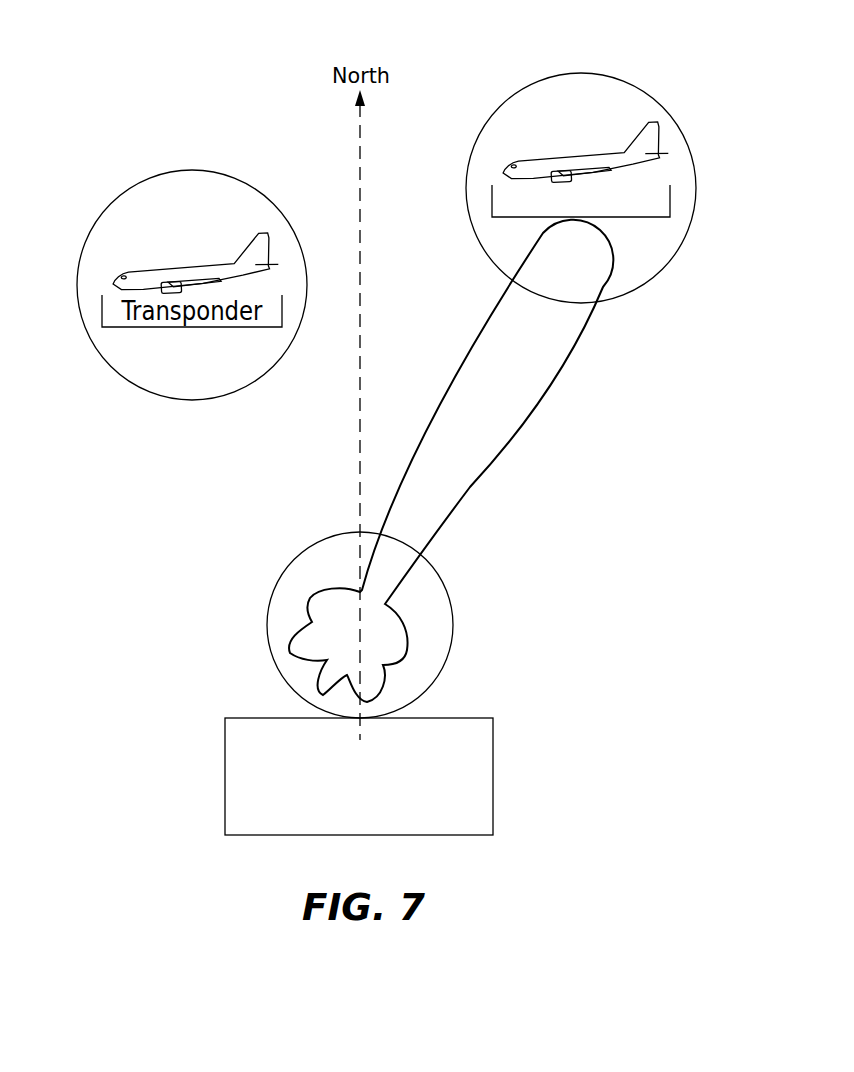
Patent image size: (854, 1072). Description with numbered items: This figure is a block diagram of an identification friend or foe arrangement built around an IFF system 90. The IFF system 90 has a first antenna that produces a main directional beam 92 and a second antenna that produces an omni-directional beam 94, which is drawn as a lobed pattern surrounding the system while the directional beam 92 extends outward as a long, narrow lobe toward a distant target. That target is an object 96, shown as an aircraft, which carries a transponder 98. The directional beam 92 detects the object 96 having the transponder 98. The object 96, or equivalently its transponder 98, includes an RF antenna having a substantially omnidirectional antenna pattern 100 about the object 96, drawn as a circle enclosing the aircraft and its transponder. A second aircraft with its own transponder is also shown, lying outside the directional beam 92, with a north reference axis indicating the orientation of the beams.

The IFF system 90 is at (225, 753).
The main directional beam 92 is at (582, 320).
The omni-directional beam 94 is at (453, 623).
The object 96 is at (552, 160).
The transponder 98 is at (507, 218).
The omnidirectional antenna pattern 100 is at (535, 80).